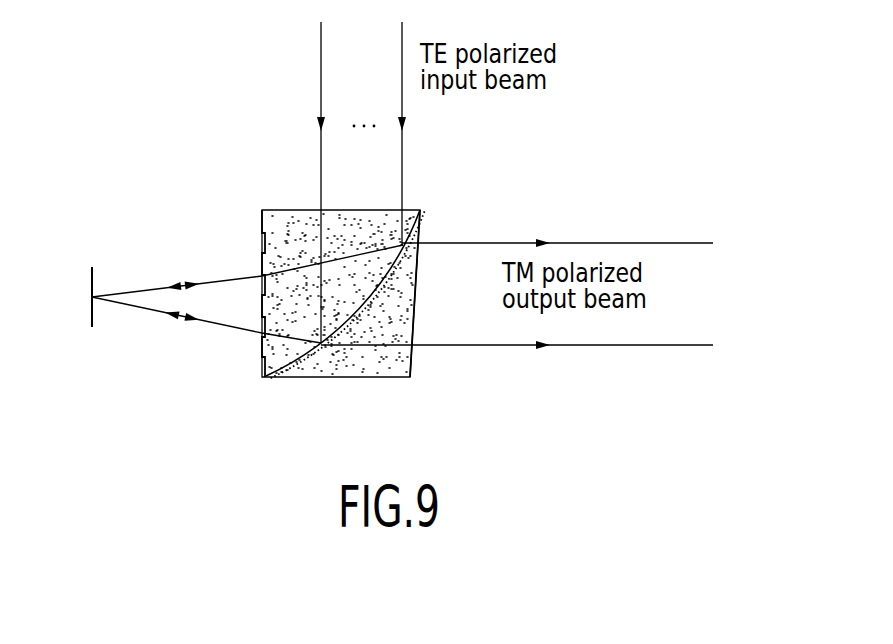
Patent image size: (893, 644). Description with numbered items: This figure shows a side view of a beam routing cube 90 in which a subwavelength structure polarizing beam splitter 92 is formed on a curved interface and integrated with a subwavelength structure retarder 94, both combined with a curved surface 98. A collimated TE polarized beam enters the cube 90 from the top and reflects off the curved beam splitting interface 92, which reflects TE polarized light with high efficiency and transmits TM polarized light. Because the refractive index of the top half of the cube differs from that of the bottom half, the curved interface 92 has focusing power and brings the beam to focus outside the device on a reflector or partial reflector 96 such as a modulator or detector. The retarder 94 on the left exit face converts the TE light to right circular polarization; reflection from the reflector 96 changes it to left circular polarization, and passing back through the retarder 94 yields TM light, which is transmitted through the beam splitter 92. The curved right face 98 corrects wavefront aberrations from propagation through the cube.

The polarizing beam splitter prism 90 is at (440, 201).
The subwavelength structure beam splitter 92 is at (307, 384).
The retarder 94 is at (248, 233).
The reflector or partial reflector 96 is at (77, 305).
The curved surface 98 is at (425, 312).